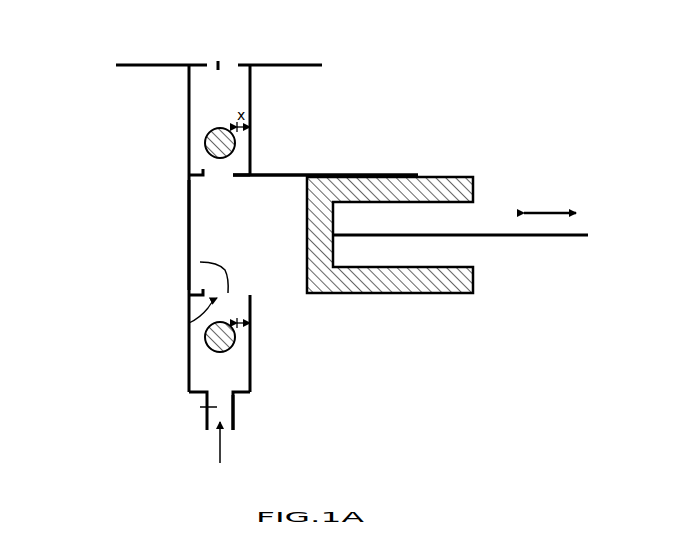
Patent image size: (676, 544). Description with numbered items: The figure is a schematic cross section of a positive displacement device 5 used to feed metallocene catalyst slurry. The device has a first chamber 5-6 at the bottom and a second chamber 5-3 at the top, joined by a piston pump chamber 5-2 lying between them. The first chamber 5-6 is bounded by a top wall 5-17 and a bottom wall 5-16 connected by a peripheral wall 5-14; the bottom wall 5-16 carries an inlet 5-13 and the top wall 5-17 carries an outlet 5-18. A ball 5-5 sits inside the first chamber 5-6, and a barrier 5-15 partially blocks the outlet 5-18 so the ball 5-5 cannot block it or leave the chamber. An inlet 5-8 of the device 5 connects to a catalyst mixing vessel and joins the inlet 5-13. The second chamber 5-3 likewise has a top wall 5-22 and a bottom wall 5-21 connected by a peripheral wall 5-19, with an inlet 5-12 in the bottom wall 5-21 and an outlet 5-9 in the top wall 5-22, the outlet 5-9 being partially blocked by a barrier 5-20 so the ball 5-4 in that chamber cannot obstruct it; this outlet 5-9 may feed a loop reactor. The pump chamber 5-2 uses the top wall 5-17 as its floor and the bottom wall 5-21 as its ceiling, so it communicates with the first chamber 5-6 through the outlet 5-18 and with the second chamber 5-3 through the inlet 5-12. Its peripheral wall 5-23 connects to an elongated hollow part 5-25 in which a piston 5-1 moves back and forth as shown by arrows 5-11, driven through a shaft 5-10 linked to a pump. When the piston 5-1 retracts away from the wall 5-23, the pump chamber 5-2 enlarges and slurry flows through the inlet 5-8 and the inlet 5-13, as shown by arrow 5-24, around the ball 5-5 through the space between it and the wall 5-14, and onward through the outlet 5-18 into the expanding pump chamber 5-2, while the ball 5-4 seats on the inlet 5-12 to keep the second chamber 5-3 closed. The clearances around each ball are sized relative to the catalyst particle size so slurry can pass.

The positive displacement device 5 is at (62, 133).
The piston 5-1 is at (452, 178).
The pump chamber 5-2 is at (218, 250).
The second chamber 5-3 is at (233, 95).
The ball 5-4 is at (206, 144).
The ball 5-5 is at (207, 348).
The first chamber 5-6 is at (233, 360).
The inlet 5-8 is at (200, 407).
The outlet 5-9 is at (225, 60).
The shaft 5-10 is at (492, 235).
The arrows 5-11 is at (557, 212).
The inlet 5-12 is at (220, 173).
The inlet 5-13 is at (222, 392).
The peripheral wall 5-14 is at (251, 320).
The barrier 5-15 is at (189, 323).
The bottom wall 5-16 is at (236, 396).
The top wall 5-17 is at (189, 288).
The outlet 5-18 is at (200, 262).
The peripheral wall 5-19 is at (189, 165).
The barrier 5-20 is at (206, 71).
The bottom wall 5-21 is at (197, 178).
The top wall 5-22 is at (238, 65).
The peripheral wall 5-23 is at (188, 228).
The arrow 5-24 is at (219, 461).
The elongated hollow part 5-25 is at (345, 175).